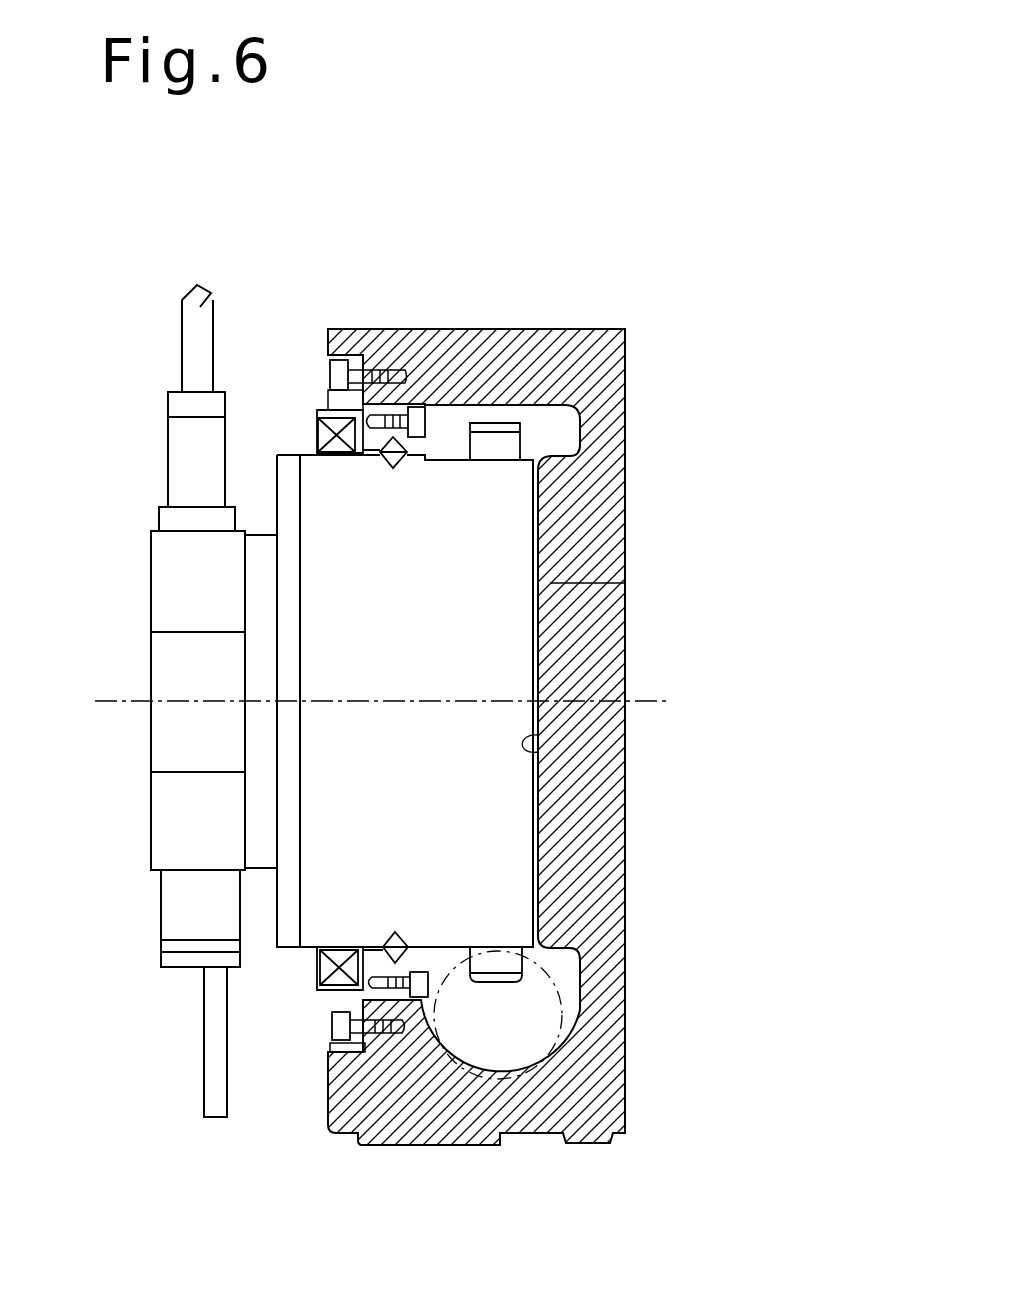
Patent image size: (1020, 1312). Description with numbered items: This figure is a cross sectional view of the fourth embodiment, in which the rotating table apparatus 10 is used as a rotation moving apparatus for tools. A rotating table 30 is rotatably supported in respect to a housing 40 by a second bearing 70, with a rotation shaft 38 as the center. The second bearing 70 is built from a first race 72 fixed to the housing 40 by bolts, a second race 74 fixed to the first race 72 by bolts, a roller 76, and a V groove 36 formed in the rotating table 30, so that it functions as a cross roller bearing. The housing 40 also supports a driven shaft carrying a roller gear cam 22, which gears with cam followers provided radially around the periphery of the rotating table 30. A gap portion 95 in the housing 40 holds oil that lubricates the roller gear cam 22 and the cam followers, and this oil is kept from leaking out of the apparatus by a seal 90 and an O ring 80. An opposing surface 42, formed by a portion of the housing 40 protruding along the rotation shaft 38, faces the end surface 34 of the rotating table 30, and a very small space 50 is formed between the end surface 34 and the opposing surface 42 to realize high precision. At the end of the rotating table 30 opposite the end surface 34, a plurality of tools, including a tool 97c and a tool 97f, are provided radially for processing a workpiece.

The rotating table apparatus 10 is at (308, 408).
The roller gear cam 22 is at (518, 1060).
The rotating table 30 is at (287, 605).
The end surface 34 is at (538, 752).
The V groove 36 is at (322, 973).
The rotation shaft 38 is at (653, 700).
The housing 40 is at (597, 513).
The opposing surface 42 is at (540, 822).
The space 50 is at (550, 585).
The second bearing 70 is at (400, 326).
The first race 72 is at (343, 358).
The second race 74 is at (427, 406).
The roller 76 is at (385, 406).
The O ring 80 is at (383, 1000).
The seal 90 is at (317, 438).
The gap portion 95 is at (562, 442).
The tool 97c is at (198, 291).
The tool 97f is at (215, 1120).